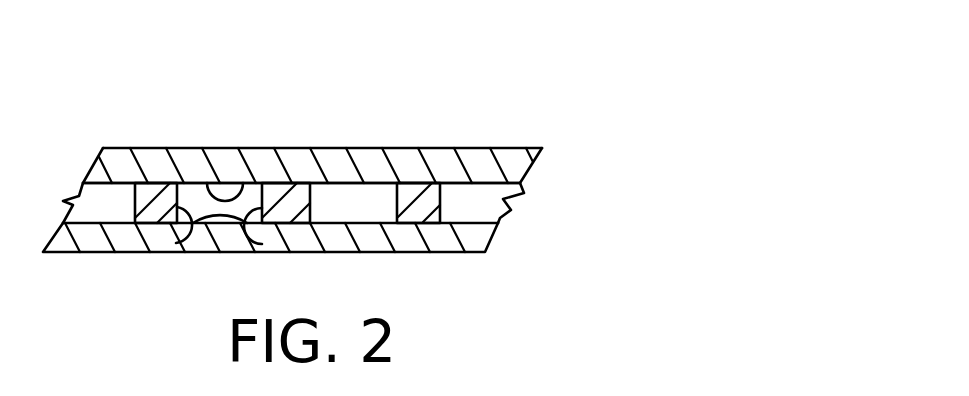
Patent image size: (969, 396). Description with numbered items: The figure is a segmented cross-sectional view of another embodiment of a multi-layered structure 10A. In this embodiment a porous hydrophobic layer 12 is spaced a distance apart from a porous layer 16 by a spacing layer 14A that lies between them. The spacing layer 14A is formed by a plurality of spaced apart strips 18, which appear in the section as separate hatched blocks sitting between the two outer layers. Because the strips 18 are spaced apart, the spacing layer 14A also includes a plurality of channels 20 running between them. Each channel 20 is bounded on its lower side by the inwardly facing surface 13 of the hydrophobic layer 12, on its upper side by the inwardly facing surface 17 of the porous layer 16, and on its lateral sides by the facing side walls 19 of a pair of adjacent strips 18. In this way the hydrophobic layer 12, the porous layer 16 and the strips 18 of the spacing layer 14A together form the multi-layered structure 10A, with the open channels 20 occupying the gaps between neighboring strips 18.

The multi-layered structure 10A is at (350, 166).
The porous hydrophobic layer 12 is at (276, 266).
The inwardly facing surface 13 is at (211, 262).
The spacing layer 14A is at (351, 193).
The porous layer 16 is at (312, 132).
The inwardly facing surface 17 is at (191, 141).
The strip 18 is at (287, 151).
The facing side wall 19 is at (212, 260).
The channel 20 is at (355, 136).